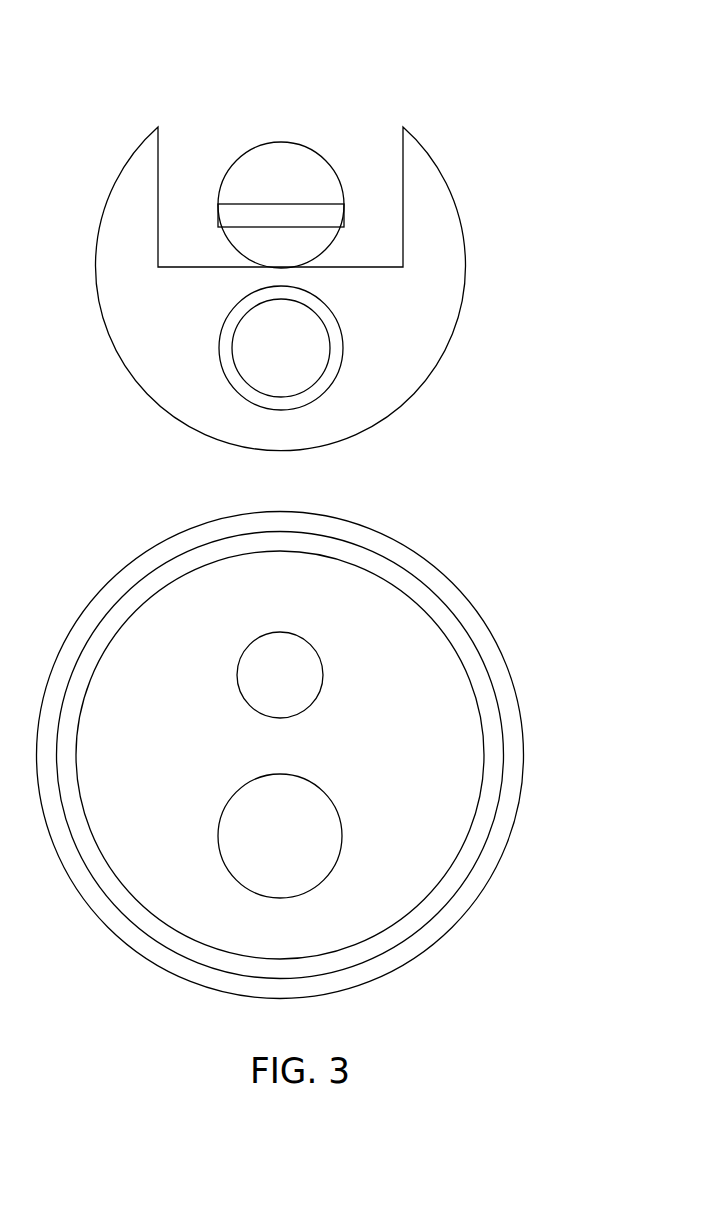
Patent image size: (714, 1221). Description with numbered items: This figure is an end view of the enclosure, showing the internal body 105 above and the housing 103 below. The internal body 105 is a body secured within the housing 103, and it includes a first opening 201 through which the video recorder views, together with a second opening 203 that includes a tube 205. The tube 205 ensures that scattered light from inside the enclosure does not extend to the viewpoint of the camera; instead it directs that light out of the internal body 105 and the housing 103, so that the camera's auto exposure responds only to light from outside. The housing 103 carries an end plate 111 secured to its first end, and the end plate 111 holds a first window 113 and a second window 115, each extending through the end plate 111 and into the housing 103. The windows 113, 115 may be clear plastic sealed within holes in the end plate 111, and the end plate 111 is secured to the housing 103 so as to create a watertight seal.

The first opening 201 is at (412, 72).
The internal body 105 is at (458, 208).
The tube 205 is at (331, 348).
The second opening 203 is at (291, 362).
The housing 103 is at (515, 685).
The end plate 111 is at (485, 747).
The first window 113 is at (323, 674).
The second window 115 is at (342, 836).